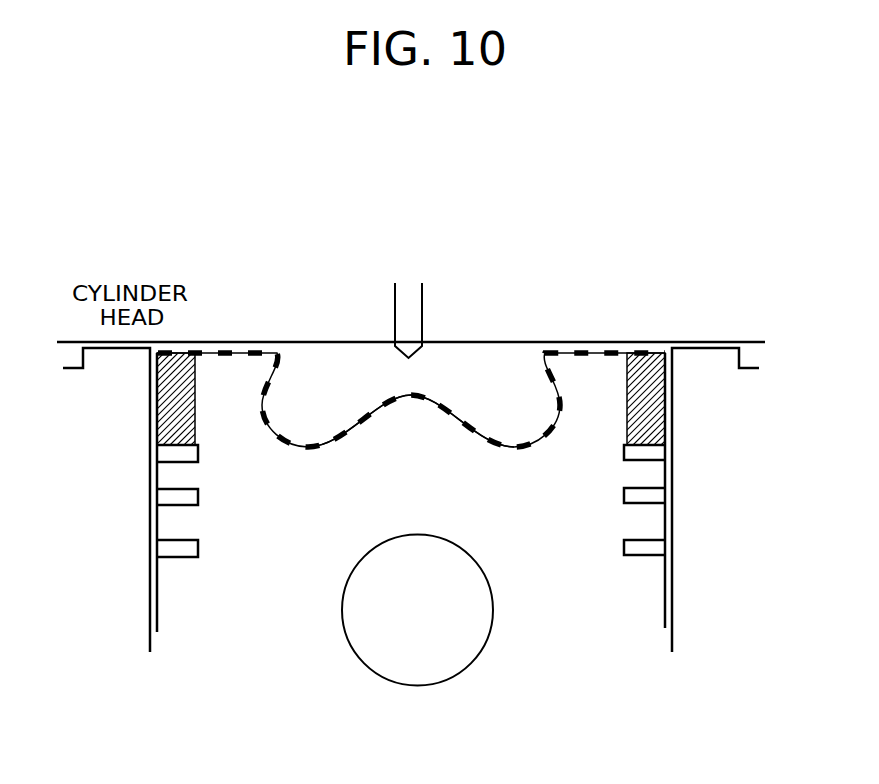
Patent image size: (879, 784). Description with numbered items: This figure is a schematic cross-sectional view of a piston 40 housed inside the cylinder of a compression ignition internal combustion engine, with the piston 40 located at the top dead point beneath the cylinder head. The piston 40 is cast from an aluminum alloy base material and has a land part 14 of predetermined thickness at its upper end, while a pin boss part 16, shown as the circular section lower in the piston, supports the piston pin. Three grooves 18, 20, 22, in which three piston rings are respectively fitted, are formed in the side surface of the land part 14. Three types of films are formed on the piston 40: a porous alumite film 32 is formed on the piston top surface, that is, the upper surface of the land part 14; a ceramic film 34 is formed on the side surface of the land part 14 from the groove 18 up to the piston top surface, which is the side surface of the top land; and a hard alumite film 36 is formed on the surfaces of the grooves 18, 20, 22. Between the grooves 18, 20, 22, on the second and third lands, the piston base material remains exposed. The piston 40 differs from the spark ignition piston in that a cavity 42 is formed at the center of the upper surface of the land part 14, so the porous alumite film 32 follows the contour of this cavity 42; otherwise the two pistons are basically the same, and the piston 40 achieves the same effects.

The land part 14 is at (190, 577).
The pin boss part 16 is at (443, 643).
The groove 18 is at (174, 453).
The groove 20 is at (174, 496).
The groove 22 is at (174, 548).
The porous alumite film 32 is at (242, 354).
The ceramic film 34 is at (158, 395).
The hard alumite film 36 is at (652, 459).
The piston 40 is at (617, 628).
The cavity 42 is at (383, 398).